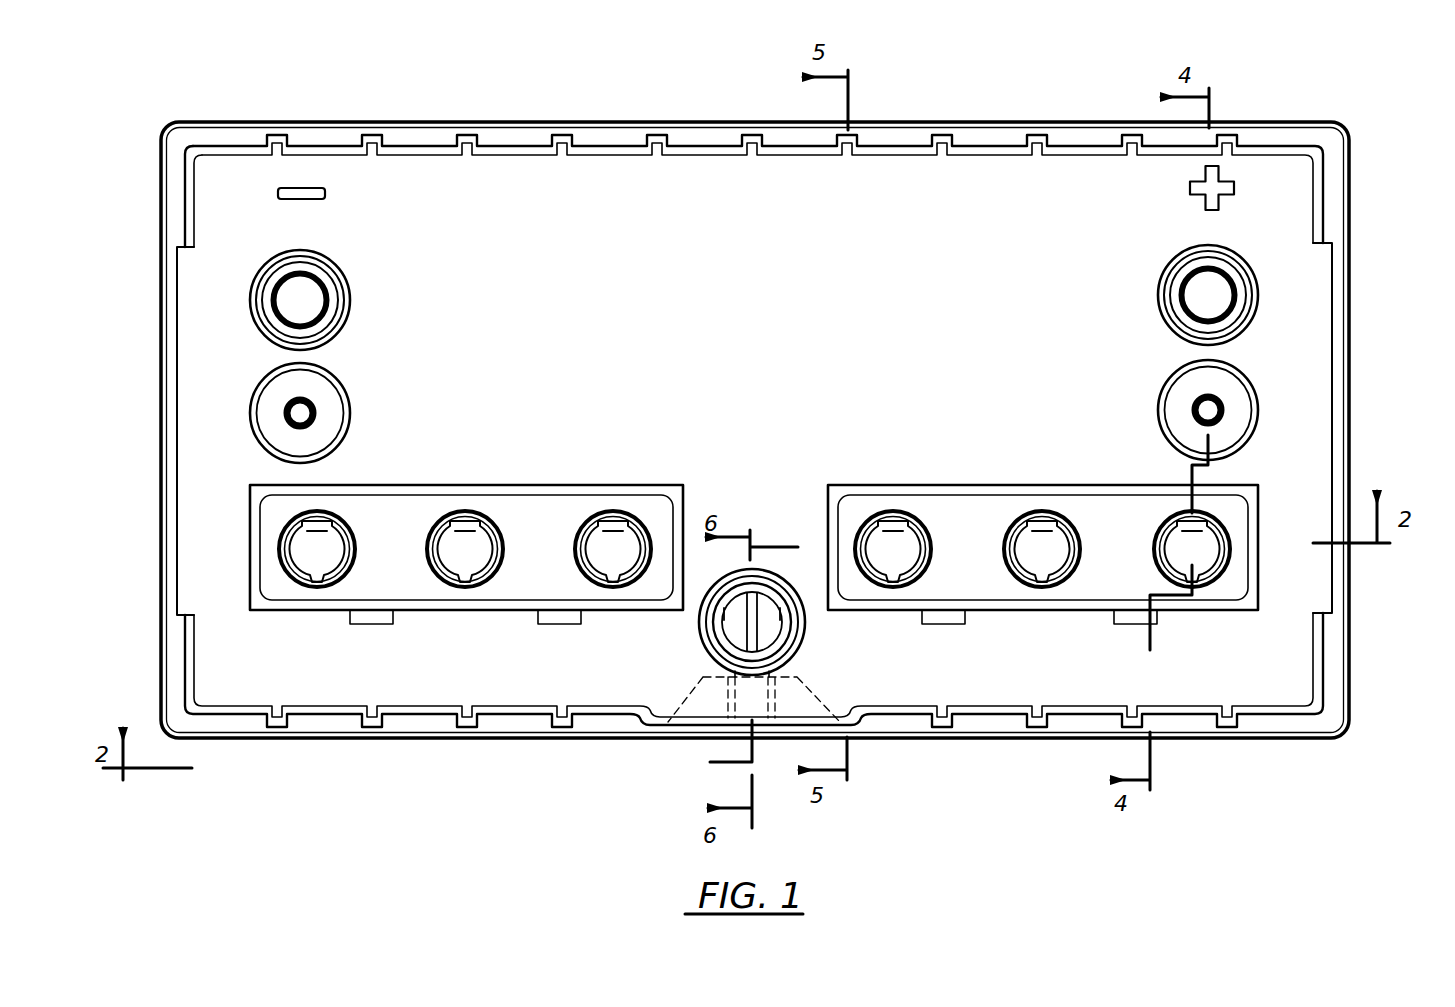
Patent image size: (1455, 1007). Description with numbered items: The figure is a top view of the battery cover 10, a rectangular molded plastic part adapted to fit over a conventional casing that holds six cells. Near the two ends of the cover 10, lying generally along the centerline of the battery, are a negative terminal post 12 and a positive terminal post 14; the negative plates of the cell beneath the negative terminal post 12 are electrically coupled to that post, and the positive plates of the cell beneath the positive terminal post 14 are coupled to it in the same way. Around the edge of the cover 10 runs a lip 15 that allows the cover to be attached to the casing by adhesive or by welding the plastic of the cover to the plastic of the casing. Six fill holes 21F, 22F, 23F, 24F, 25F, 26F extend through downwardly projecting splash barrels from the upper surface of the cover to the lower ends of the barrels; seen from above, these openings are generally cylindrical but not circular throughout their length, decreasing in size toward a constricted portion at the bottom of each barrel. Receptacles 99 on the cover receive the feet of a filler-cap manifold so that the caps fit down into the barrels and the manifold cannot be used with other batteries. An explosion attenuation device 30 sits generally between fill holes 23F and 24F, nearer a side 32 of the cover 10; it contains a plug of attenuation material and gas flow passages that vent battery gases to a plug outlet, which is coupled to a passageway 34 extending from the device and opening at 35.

The cover 10 is at (608, 66).
The negative terminal post 12 is at (313, 412).
The positive terminal post 14 is at (1222, 405).
The lip 15 is at (1348, 728).
The fill hole 21F is at (355, 531).
The fill hole 22F is at (440, 565).
The fill hole 23F is at (582, 566).
The fill hole 24F is at (912, 520).
The fill hole 25F is at (1040, 512).
The fill hole 26F is at (1165, 530).
The explosion attenuation device 30 is at (732, 630).
The side 32 is at (943, 748).
The passageway 34 is at (760, 698).
The opening 35 is at (724, 718).
The receptacles 99 is at (549, 540).